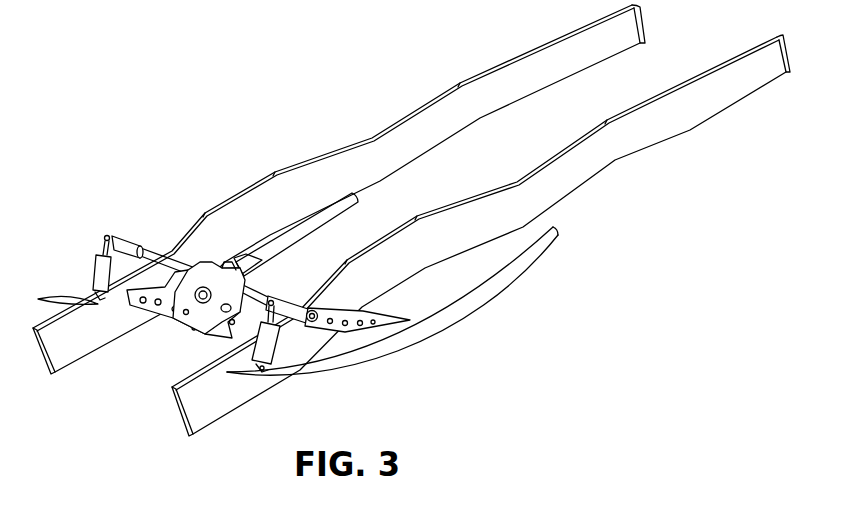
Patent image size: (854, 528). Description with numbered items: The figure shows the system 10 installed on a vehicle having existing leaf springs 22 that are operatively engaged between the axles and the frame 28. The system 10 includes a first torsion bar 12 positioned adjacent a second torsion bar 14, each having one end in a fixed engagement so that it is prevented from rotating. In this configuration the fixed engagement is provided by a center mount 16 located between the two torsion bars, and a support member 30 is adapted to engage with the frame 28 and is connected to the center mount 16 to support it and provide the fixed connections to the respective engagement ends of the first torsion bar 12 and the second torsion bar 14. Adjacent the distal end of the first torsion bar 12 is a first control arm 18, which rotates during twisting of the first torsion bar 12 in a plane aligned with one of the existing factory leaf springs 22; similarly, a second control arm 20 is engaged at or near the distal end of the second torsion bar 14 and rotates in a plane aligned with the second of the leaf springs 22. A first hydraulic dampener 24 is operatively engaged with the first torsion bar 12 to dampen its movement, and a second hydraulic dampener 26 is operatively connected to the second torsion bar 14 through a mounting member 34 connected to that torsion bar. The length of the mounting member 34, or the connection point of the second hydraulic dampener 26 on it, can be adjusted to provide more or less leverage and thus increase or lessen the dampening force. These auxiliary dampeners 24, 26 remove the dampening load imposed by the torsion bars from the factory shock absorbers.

The system 10 is at (265, 138).
The first torsion bar 12 is at (203, 252).
The second torsion bar 14 is at (253, 288).
The center mount 16 is at (242, 268).
The first control arm 18 is at (147, 255).
The second control arm 20 is at (363, 315).
The leaf spring 22 is at (347, 200).
The first hydraulic dampener 24 is at (100, 248).
The second hydraulic dampener 26 is at (282, 347).
The frame 28 is at (395, 127).
The support member 30 is at (173, 308).
The mounting member 34 is at (107, 236).